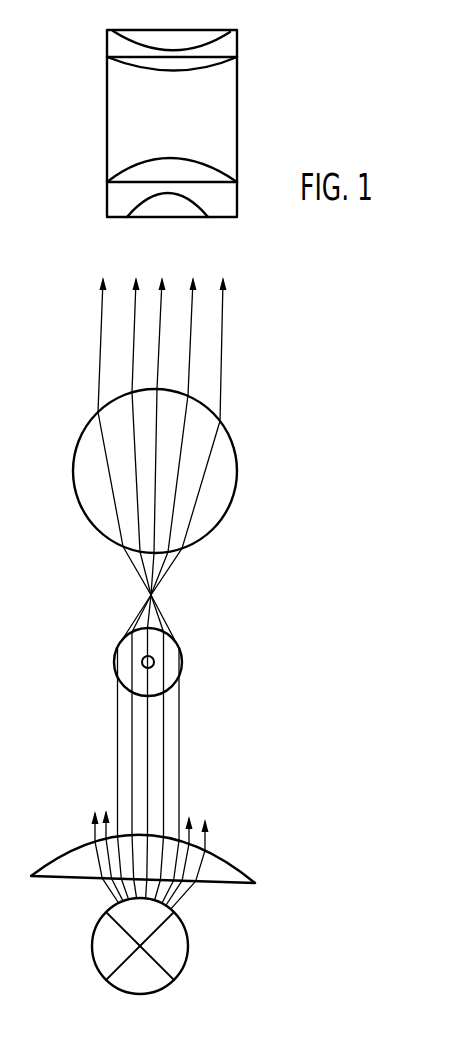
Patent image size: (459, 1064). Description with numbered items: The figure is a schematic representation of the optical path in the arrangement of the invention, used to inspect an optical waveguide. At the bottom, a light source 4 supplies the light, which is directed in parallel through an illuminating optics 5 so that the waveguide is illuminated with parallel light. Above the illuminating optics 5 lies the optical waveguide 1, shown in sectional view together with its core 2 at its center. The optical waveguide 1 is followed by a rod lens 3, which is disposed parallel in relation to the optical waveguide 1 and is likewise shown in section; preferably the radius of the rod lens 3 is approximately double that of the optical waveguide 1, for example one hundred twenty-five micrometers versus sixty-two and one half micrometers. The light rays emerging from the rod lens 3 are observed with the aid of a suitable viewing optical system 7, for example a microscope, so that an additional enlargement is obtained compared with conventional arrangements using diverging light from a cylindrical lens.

The optical waveguide 1 is at (173, 645).
The core 2 is at (128, 648).
The rod lens 3 is at (237, 470).
The light source 4 is at (189, 945).
The illuminating optics 5 is at (237, 862).
The viewing optical system 7 is at (238, 128).